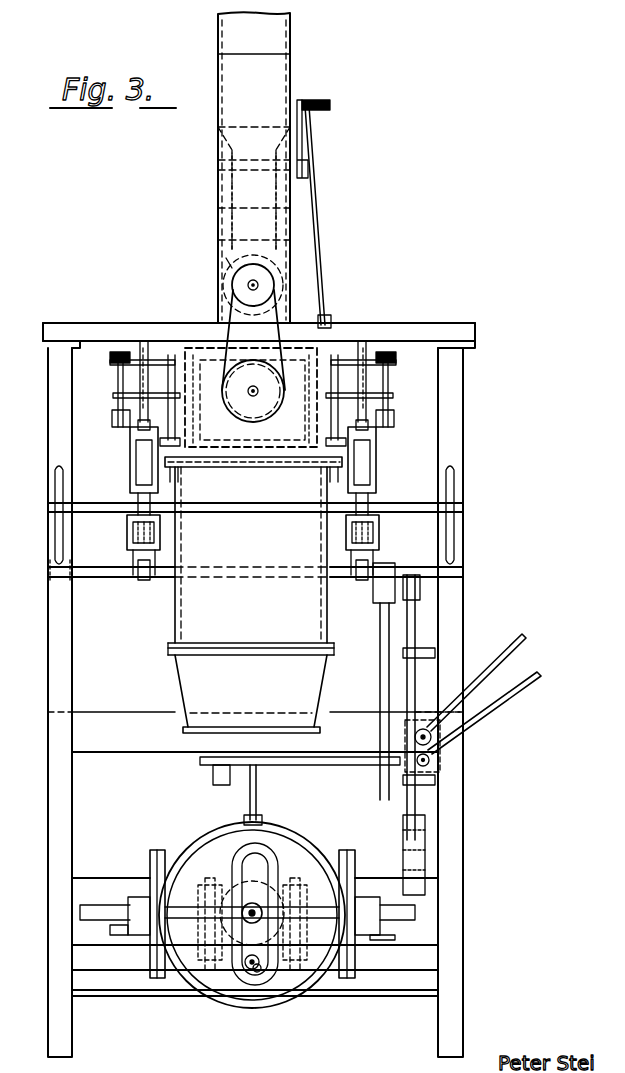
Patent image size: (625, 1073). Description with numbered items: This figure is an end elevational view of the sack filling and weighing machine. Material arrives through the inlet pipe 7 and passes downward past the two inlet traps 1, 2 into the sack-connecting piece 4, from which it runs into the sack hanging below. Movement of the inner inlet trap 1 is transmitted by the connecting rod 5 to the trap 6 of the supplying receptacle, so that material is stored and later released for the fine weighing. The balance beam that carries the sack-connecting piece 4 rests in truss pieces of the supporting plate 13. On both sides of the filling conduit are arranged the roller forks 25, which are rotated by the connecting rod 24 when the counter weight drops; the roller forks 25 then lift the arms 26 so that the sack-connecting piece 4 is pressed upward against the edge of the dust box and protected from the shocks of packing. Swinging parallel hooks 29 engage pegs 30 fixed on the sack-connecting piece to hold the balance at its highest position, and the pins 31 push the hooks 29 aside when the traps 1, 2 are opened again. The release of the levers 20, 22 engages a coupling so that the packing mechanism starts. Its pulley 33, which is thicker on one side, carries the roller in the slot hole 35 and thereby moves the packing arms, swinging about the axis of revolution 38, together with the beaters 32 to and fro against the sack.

The inner inlet trap 1 is at (231, 452).
The inlet trap 2 is at (250, 462).
The sack-connecting piece 4 is at (175, 620).
The connecting rod 5 is at (321, 210).
The trap 6 is at (226, 258).
The inlet pipe 7 is at (254, 167).
The supporting plate 13 is at (381, 323).
The lever 20 is at (257, 792).
The lever 22 is at (262, 846).
The connecting rod 24 is at (380, 672).
The roller fork 25 is at (380, 545).
The arm 26 is at (370, 498).
The parallel hook 29 is at (388, 383).
The peg 30 is at (388, 418).
The pin 31 is at (253, 393).
The beater 32 is at (364, 852).
The pulley 33 is at (280, 830).
The slot hole 35 is at (279, 866).
The axis of revolution 38 is at (308, 890).